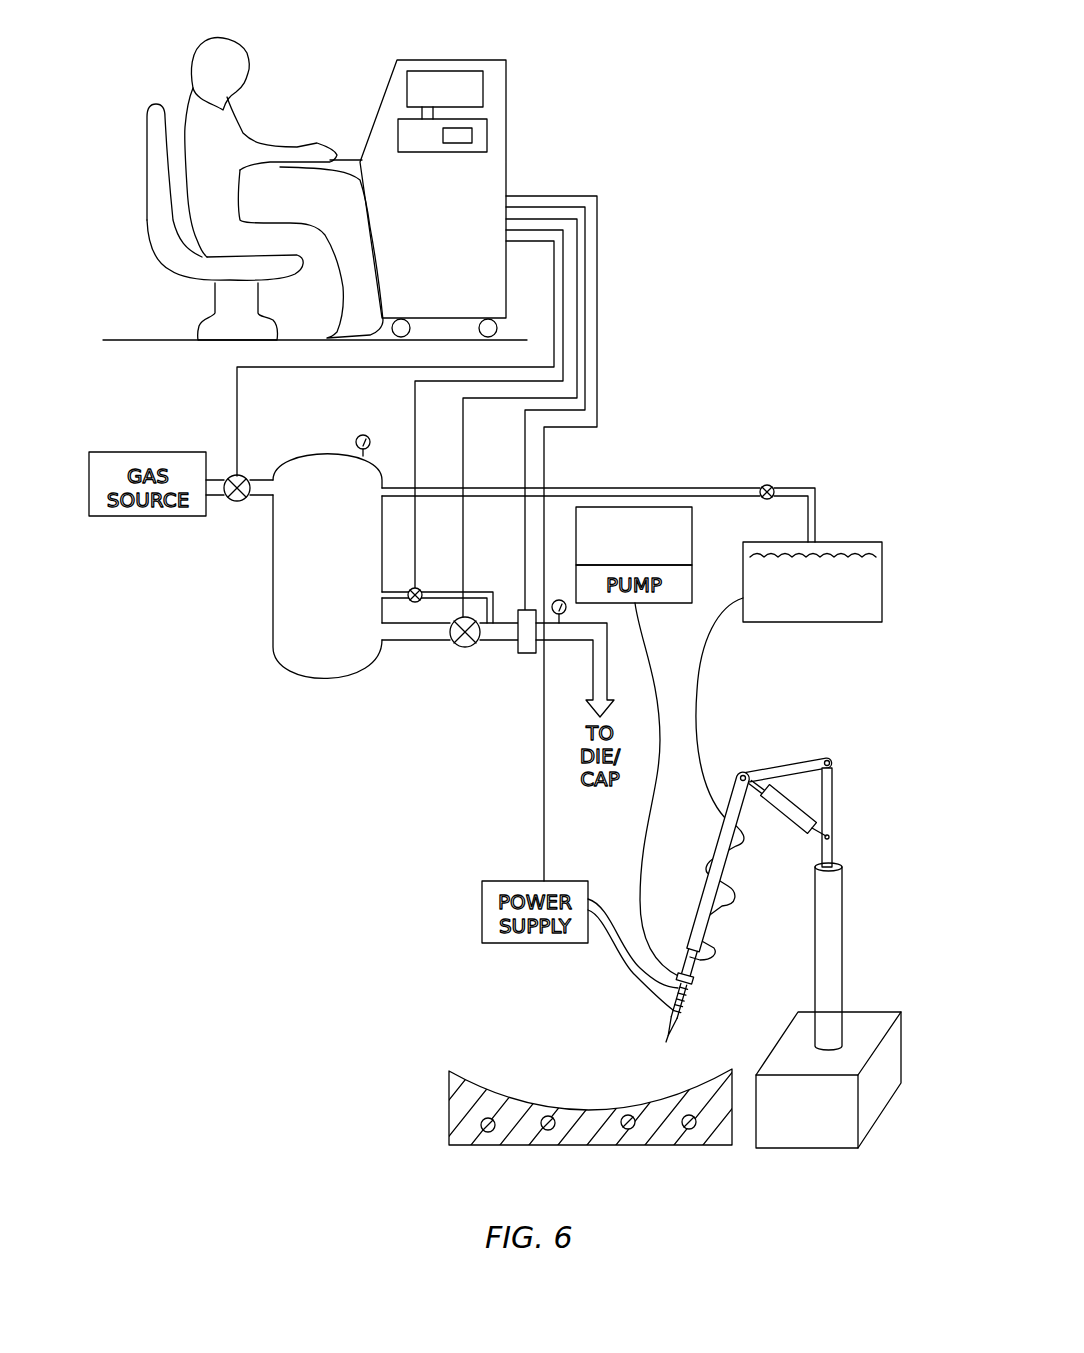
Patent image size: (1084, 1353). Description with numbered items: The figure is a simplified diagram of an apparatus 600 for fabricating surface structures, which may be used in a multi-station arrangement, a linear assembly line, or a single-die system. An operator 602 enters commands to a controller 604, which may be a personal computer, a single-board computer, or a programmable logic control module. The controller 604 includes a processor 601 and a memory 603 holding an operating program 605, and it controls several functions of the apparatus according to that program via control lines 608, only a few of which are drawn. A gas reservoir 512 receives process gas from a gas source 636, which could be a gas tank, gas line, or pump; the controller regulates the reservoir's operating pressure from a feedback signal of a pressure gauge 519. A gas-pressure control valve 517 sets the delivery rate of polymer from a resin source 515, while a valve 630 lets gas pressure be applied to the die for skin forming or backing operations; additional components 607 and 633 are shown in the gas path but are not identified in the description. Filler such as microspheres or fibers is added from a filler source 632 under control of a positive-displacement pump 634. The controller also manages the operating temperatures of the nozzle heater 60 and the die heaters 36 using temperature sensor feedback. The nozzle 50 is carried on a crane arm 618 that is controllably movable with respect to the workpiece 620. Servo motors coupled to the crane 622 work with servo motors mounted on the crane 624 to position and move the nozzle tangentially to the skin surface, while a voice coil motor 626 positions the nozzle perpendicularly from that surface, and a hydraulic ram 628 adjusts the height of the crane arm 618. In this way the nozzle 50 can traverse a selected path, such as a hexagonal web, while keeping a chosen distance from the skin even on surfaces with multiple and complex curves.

The apparatus 600 is at (351, 158).
The operator 602 is at (266, 109).
The controller 604 is at (447, 60).
The processor 601 is at (483, 90).
The memory 603 is at (487, 128).
The operating program 605 is at (472, 136).
The control lines 608 is at (560, 286).
The gas source 636 is at (147, 452).
The gas reservoir 512 is at (312, 451).
The pressure gauge 519 is at (360, 435).
The gas-pressure control valve 517 is at (765, 485).
The valve 630 is at (418, 588).
The valve 633 is at (468, 648).
The flow regulator 607 is at (520, 610).
The filler source 632 is at (692, 530).
The positive-displacement pump 634 is at (652, 603).
The resin source 515 is at (882, 598).
The crane arm 618 is at (787, 765).
The hydraulic ram 628 is at (792, 825).
The servo motors mounted on the crane 624 is at (693, 963).
The voice coil motor 626 is at (690, 988).
The nozzle heater 60 is at (683, 1018).
The nozzle 50 is at (665, 1033).
The workpiece 620 is at (518, 1100).
The die heaters 36 is at (690, 1145).
The servo motors coupled to the crane 622 is at (880, 1065).